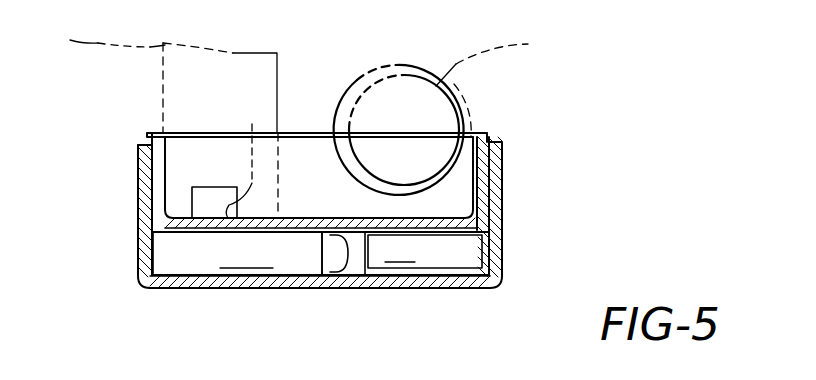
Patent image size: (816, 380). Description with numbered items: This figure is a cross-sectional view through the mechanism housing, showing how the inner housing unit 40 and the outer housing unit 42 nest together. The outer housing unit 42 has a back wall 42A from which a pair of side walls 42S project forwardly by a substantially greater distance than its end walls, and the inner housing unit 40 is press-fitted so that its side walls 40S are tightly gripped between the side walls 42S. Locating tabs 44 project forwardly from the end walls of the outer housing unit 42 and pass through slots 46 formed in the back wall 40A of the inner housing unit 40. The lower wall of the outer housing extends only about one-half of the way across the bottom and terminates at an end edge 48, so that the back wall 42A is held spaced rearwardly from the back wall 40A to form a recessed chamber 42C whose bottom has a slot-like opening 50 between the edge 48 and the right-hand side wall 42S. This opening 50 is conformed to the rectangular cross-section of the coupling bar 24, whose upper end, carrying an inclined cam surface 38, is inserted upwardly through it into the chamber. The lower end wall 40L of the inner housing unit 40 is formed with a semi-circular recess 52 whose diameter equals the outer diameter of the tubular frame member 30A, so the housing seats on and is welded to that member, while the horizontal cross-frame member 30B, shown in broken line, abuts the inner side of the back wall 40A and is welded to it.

The coupling bar 24 is at (425, 251).
The frame member 30A is at (509, 83).
The lower cross-frame member 30B is at (101, 30).
The inclined cam surface 38 is at (350, 262).
The inner housing unit 40 is at (323, 218).
The back wall 40A is at (457, 233).
The lower end wall 40L is at (293, 130).
The side walls 40S is at (156, 150).
The outer housing unit 42 is at (233, 289).
The back wall 42A is at (432, 288).
The container compartment 42C is at (237, 253).
The side walls 42S is at (138, 208).
The locating tabs 44 is at (203, 188).
The slots 46 is at (251, 158).
The end edge 48 is at (323, 277).
The slot-like opening 50 is at (457, 272).
The semi-circular recess 52 is at (345, 163).